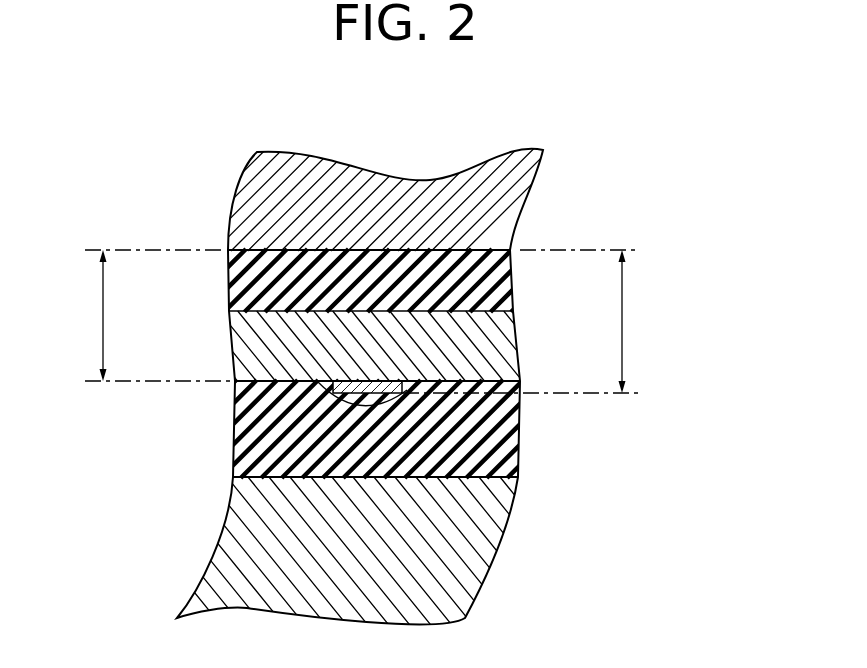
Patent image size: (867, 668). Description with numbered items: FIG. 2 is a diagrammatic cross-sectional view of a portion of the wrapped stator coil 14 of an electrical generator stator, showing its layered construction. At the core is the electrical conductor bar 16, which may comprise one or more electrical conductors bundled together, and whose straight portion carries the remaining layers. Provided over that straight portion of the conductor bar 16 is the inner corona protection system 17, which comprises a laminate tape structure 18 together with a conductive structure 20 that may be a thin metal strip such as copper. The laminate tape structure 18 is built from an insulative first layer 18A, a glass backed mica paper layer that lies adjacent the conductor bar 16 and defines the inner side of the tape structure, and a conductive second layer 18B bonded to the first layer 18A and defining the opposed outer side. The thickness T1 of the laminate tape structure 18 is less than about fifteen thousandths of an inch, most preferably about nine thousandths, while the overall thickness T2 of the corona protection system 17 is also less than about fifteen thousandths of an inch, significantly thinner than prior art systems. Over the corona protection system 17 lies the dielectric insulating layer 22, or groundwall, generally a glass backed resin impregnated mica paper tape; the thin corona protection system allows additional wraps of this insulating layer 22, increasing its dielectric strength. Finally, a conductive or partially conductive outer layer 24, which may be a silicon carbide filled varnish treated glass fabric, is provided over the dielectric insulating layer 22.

The wrapped stator coil 14 is at (357, 362).
The electrical conductor bar 16 is at (498, 170).
The inner corona protection system 17 is at (222, 338).
The laminate tape structure 18 is at (333, 315).
The insulative first layer 18A is at (284, 291).
The conductive second layer 18B is at (284, 355).
The conductive structure 20 is at (368, 392).
The dielectric insulating layer 22 is at (271, 433).
The conductive outer layer 24 is at (457, 542).
The thickness of the laminate tape structure T1 is at (100, 312).
The overall thickness of the corona protection system T2 is at (624, 324).